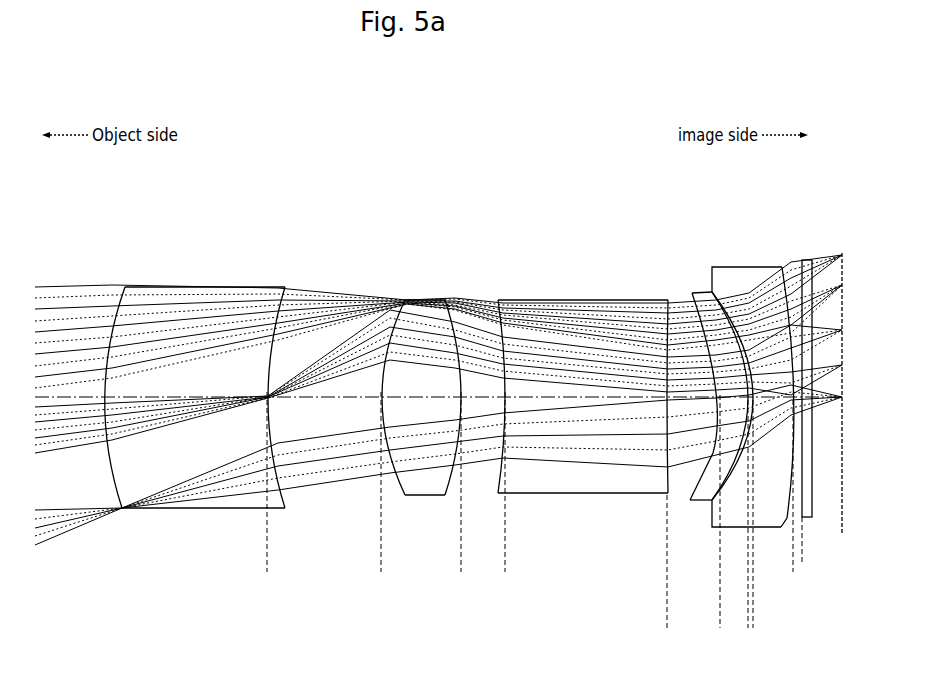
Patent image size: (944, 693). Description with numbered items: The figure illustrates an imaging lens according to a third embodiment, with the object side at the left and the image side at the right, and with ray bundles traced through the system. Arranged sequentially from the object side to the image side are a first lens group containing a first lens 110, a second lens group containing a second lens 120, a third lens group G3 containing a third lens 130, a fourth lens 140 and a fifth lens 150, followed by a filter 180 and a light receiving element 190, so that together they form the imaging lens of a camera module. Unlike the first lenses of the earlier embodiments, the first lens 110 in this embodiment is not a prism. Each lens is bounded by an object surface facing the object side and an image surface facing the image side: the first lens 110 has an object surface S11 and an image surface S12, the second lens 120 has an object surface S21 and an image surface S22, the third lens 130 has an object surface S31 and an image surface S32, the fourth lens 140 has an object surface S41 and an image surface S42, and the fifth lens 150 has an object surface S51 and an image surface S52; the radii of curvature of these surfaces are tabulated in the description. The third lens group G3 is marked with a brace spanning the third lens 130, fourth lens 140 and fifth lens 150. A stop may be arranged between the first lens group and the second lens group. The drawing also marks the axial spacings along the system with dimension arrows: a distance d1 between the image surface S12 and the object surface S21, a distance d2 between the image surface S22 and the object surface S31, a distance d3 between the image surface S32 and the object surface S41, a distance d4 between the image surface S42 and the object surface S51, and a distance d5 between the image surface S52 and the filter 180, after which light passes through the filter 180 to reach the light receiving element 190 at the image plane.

The first lens 110 is at (207, 405).
The second lens 120 is at (422, 412).
The third lens 130 is at (573, 428).
The fourth lens 140 is at (715, 426).
The fifth lens 150 is at (741, 425).
The third lens group G3 is at (600, 223).
The filter 180 is at (809, 518).
The light receiving element 190 is at (841, 534).
The object surface of the first lens S11 is at (118, 509).
The image surface of the first lens S12 is at (286, 509).
The object surface of the second lens S21 is at (401, 497).
The image surface of the second lens S22 is at (445, 497).
The object surface of the third lens S31 is at (497, 494).
The image surface of the third lens S32 is at (668, 494).
The object surface of the fourth lens S41 is at (694, 504).
The image surface of the fourth lens S42 is at (725, 490).
The object surface of the fifth lens S51 is at (720, 570).
The image surface of the fifth lens S52 is at (787, 531).
The distance between S12 and S21 d1 is at (267, 565).
The distance between S22 and S31 d2 is at (461, 565).
The distance between S32 and S41 d3 is at (720, 625).
The distance between S42 and S51 d4 is at (770, 625).
The distance between S52 and filter d5 is at (778, 563).